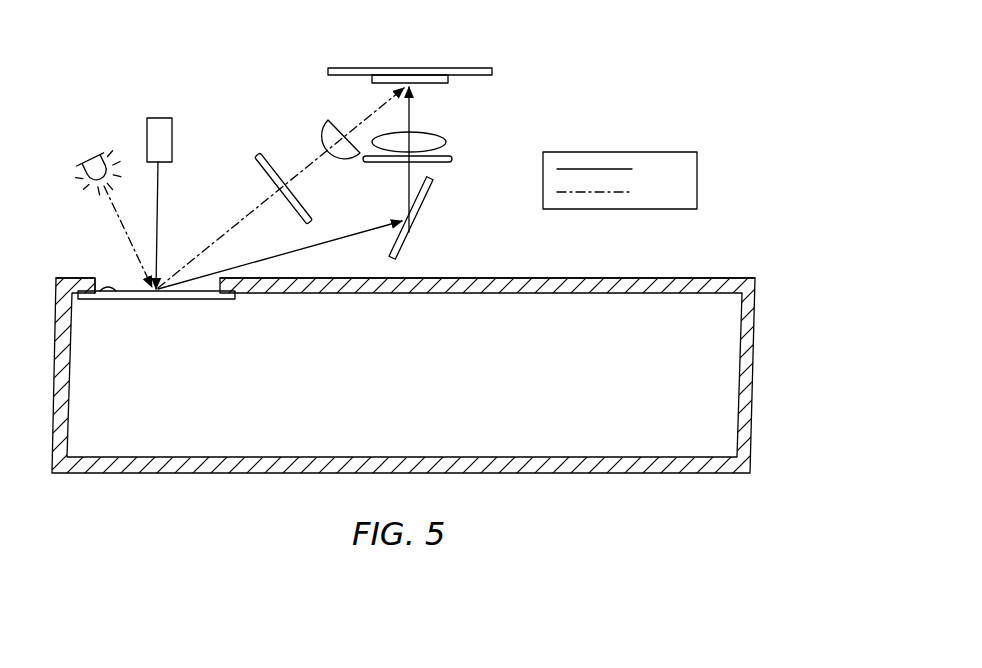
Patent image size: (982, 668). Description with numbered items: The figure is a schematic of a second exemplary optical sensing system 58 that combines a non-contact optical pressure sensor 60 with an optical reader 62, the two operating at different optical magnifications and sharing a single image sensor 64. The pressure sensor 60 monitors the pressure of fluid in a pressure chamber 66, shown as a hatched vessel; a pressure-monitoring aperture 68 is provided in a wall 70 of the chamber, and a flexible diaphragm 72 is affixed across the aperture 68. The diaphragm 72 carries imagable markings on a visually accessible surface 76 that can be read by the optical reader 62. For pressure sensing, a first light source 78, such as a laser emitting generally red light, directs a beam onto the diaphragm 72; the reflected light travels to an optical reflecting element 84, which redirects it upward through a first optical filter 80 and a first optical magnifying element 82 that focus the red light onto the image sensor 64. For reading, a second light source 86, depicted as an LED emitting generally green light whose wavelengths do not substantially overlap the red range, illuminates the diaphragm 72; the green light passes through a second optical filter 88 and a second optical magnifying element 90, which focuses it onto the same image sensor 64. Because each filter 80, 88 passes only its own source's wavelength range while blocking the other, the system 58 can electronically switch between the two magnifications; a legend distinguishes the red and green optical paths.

The optical sensing system 58 is at (630, 85).
The optical pressure sensor 60 is at (440, 205).
The optical reader 62 is at (252, 112).
The image sensor 64 is at (452, 80).
The pressure chamber 66 is at (758, 320).
The pressure-monitoring aperture 68 is at (96, 278).
The wall 70 is at (716, 278).
The flexible diaphragm 72 is at (195, 300).
The visually accessible surface 76 is at (110, 292).
The first light source 78 is at (158, 118).
The first optical filter 80 is at (453, 159).
The first optical magnifying element 82 is at (448, 141).
The optical reflecting element 84 is at (411, 240).
The second light source 86 is at (79, 172).
The second optical filter 88 is at (257, 155).
The second optical magnifying element 90 is at (328, 121).